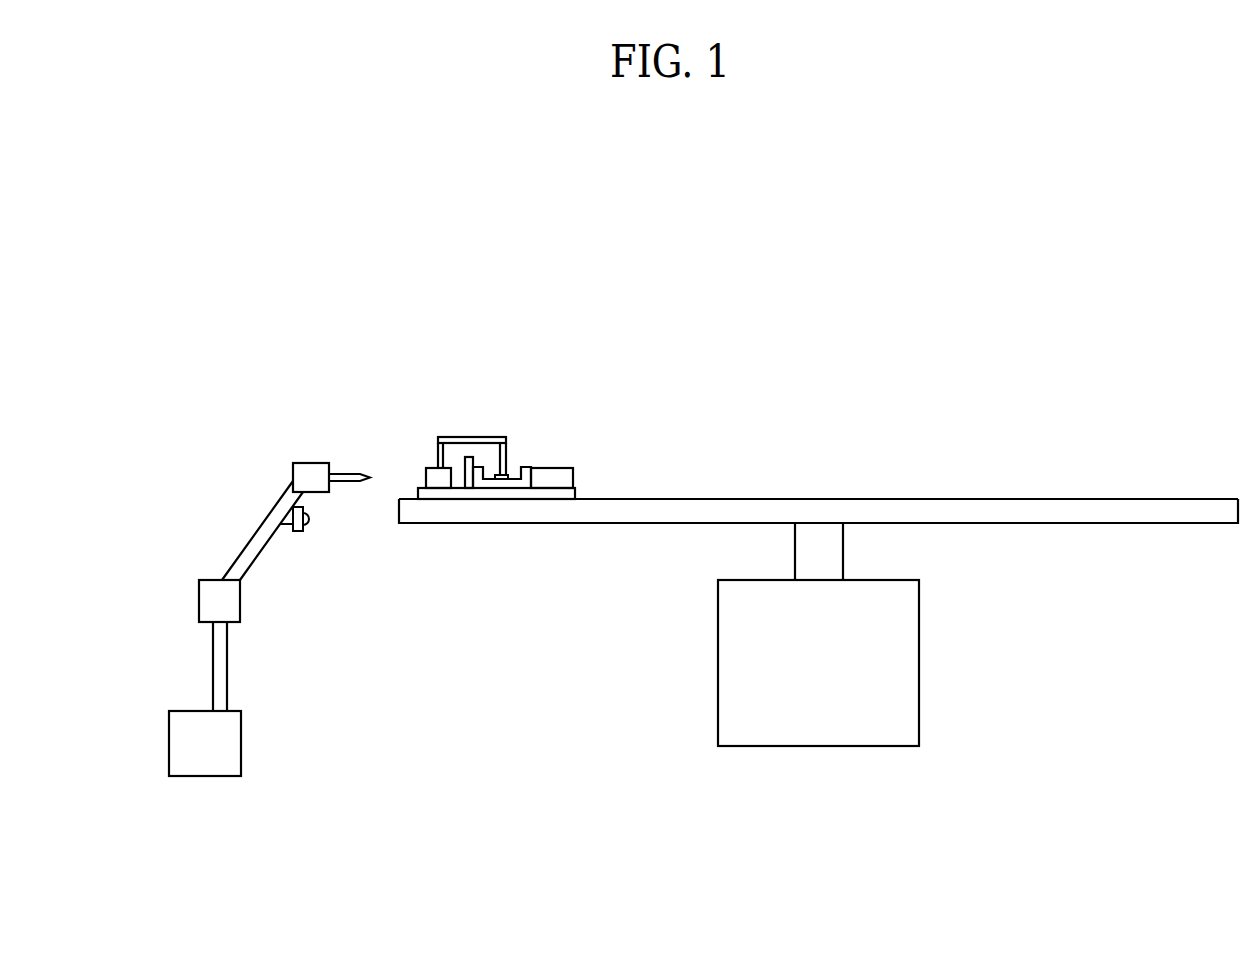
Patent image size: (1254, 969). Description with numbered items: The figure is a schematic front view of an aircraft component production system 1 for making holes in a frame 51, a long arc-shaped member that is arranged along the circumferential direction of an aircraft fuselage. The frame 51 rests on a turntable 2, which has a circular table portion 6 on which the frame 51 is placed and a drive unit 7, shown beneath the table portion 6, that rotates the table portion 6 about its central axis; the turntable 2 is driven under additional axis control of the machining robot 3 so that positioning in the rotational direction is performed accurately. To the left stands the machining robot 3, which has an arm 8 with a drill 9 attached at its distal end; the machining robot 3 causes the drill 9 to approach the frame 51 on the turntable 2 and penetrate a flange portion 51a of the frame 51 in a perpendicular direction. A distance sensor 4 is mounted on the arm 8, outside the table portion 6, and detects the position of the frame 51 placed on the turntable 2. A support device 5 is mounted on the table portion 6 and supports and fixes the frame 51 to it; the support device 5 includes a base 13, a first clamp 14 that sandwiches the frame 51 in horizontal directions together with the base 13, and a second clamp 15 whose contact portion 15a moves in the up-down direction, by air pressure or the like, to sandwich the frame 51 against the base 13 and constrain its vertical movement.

The aircraft component production system 1 is at (972, 305).
The turntable 2 is at (1133, 465).
The machining robot 3 is at (169, 742).
The distance sensor 4 is at (297, 533).
The support device 5 is at (582, 474).
The table portion 6 is at (1024, 498).
The drive unit 7 is at (920, 663).
The arm 8 is at (213, 658).
The drill 9 is at (351, 473).
The base 13 is at (505, 493).
The first clamp 14 is at (555, 468).
The second clamp 15 is at (450, 437).
The contact portion 15a is at (505, 470).
The frame 51 is at (523, 466).
The flange portion 51a is at (488, 472).